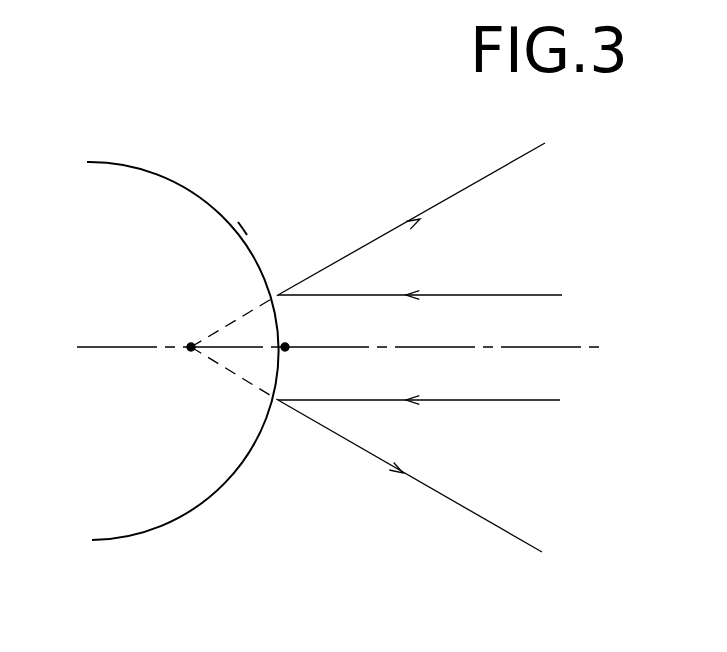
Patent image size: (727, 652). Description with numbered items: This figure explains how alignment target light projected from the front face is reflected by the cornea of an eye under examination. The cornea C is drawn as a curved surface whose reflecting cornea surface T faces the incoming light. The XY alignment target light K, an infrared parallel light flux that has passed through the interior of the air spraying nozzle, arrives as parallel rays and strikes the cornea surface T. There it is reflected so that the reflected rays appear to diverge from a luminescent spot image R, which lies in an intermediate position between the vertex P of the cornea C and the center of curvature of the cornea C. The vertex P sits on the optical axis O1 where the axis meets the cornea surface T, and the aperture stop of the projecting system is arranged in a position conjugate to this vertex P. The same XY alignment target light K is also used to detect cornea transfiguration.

The cornea C is at (235, 162).
The cornea surface T is at (247, 235).
The XY alignment target light K is at (515, 295).
The vertex of the cornea P is at (289, 345).
The luminescent spot image R is at (191, 350).
The optical axis O1 is at (577, 347).